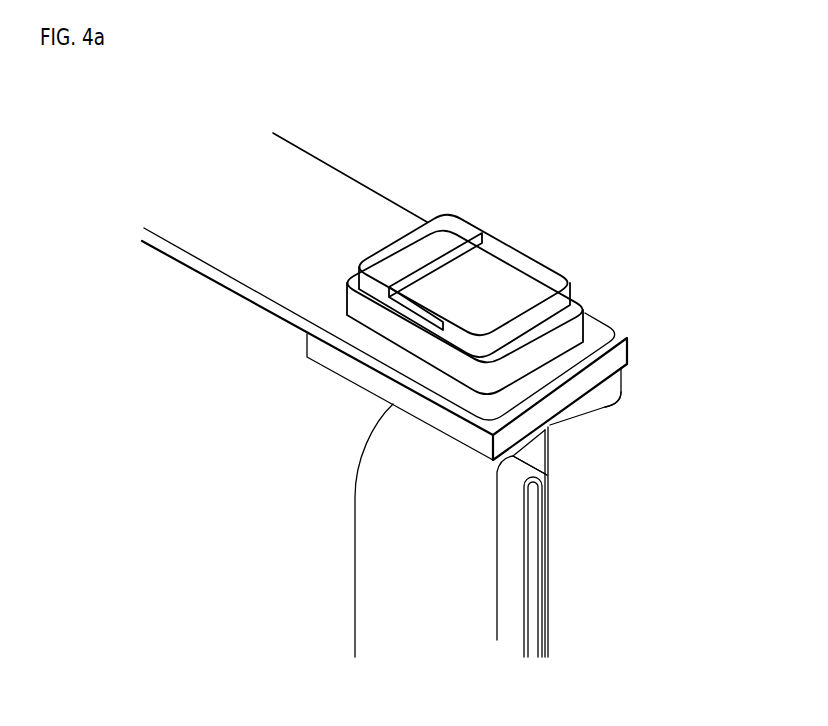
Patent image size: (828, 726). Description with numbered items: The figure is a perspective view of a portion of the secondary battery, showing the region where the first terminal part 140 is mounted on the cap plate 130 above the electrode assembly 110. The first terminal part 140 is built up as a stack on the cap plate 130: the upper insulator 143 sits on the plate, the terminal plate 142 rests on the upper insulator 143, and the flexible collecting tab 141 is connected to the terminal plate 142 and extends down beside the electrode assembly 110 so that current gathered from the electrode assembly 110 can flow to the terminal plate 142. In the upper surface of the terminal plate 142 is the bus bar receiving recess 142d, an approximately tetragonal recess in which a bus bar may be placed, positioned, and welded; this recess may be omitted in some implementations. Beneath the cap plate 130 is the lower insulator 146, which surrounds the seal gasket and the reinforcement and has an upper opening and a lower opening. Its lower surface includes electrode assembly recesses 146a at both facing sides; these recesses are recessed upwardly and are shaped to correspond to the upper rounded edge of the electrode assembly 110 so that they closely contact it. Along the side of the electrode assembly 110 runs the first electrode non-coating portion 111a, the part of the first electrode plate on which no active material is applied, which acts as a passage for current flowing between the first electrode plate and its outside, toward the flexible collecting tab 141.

The electrode assembly 110 is at (264, 439).
The first electrode non-coating portion 111a is at (513, 565).
The cap plate 130 is at (603, 343).
The first terminal part 140 is at (511, 310).
The flexible collecting tab 141 is at (437, 270).
The terminal plate 142 is at (542, 285).
The bus bar receiving recess 142d is at (493, 262).
The upper insulator 143 is at (573, 330).
The lower insulator 146 is at (612, 380).
The electrode assembly recess 146a is at (573, 413).